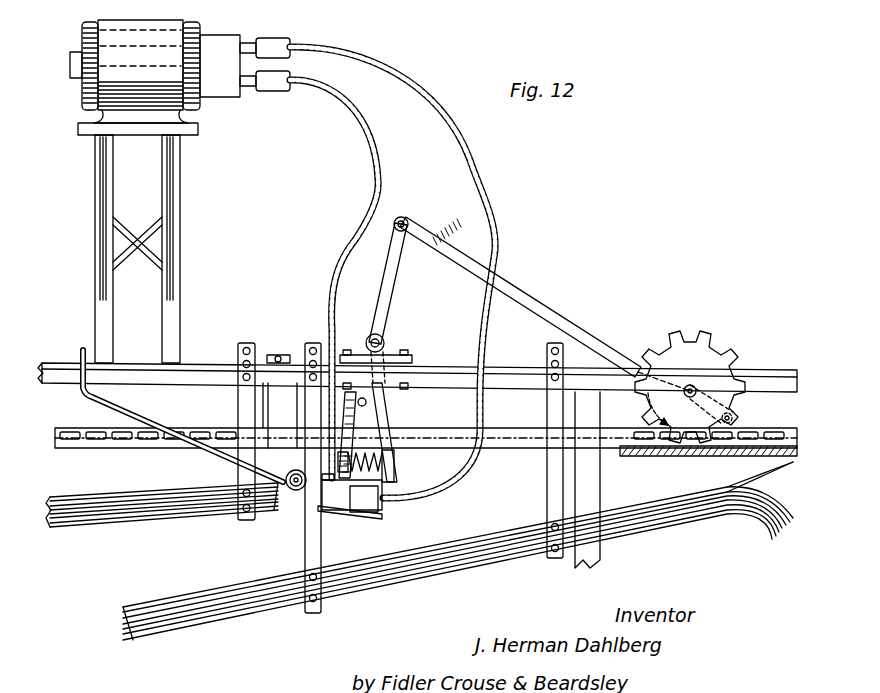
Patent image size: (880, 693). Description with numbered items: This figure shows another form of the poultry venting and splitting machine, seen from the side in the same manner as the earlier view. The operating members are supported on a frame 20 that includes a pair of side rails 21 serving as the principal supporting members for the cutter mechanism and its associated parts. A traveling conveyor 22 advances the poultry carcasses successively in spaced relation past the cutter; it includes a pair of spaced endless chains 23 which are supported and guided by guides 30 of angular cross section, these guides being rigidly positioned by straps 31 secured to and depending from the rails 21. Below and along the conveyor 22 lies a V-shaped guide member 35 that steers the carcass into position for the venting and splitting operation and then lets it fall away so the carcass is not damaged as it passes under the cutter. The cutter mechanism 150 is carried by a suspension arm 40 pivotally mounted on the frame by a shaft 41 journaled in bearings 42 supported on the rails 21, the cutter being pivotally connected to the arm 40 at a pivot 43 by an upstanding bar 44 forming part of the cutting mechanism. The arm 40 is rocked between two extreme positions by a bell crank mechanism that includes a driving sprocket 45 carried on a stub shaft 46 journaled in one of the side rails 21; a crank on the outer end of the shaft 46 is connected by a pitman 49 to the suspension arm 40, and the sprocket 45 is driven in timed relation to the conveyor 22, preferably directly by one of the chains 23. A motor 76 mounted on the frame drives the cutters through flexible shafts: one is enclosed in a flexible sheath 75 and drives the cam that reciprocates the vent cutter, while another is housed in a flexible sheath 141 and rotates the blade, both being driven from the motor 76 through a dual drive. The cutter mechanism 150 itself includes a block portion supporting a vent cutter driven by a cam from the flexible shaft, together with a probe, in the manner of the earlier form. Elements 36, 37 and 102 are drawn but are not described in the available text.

The frame 20 is at (604, 553).
The side rails 21 is at (72, 362).
The traveling conveyor 22 is at (80, 447).
The endless chains 23 is at (100, 432).
The guides 30 is at (478, 492).
The straps 31 is at (283, 404).
The guide member 35 is at (455, 545).
The brackets 36 is at (238, 470).
The conveyor 37 is at (132, 495).
The suspension arm 40 is at (394, 465).
The shaft 41 is at (369, 336).
The bearings 42 is at (388, 344).
The pivotal connection 43 is at (362, 405).
The bar 44 is at (366, 420).
The driving sprocket 45 is at (710, 352).
The stub shaft 46 is at (736, 370).
The pitman 49 is at (545, 312).
The flexible sheath 75 is at (497, 243).
The motor 76 is at (86, 90).
The control box 102 is at (220, 88).
The flexible sheath 141 is at (382, 186).
The cutter mechanism 150 is at (338, 518).